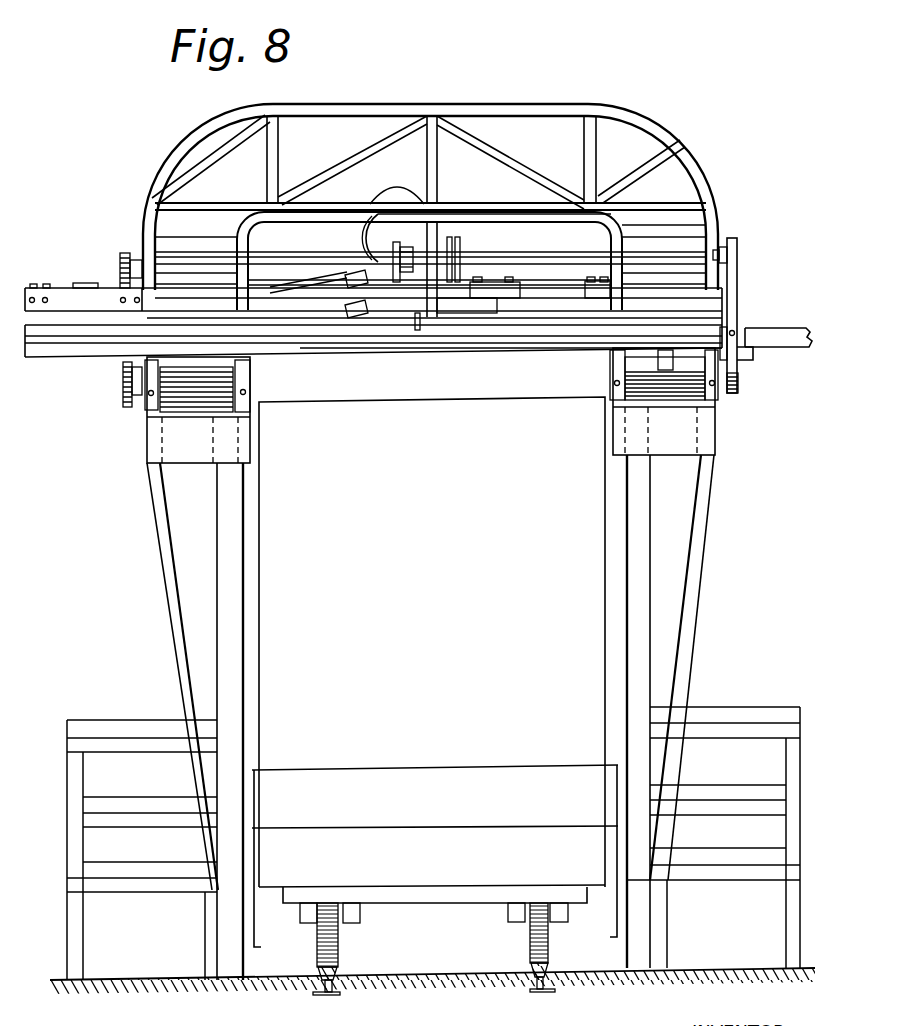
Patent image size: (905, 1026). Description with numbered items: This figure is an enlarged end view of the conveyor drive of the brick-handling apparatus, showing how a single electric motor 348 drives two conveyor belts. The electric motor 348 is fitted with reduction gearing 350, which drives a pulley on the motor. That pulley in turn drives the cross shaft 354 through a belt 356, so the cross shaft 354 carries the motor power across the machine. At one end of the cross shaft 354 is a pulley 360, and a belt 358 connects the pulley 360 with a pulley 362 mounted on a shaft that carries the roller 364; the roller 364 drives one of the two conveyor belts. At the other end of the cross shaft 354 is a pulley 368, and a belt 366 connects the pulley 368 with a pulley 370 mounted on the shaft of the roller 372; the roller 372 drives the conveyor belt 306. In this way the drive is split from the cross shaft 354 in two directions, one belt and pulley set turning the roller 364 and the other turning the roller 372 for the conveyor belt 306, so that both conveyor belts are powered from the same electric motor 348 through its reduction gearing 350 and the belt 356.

The conveyor belt 306 is at (683, 397).
The electric motor 348 is at (398, 192).
The reduction gearing 350 is at (370, 236).
The cross shaft 354 is at (535, 255).
The belt 356 is at (457, 237).
The belt 358 is at (123, 373).
The pulley 360 is at (135, 255).
The pulley 362 is at (140, 395).
The roller 364 is at (157, 407).
The belt 366 is at (737, 280).
The pulley 368 is at (723, 243).
The pulley 370 is at (723, 387).
The roller 372 is at (705, 397).